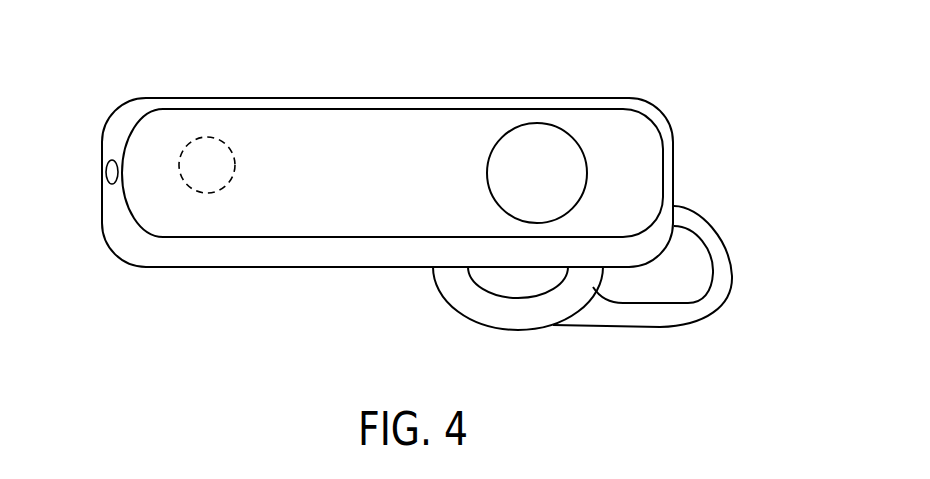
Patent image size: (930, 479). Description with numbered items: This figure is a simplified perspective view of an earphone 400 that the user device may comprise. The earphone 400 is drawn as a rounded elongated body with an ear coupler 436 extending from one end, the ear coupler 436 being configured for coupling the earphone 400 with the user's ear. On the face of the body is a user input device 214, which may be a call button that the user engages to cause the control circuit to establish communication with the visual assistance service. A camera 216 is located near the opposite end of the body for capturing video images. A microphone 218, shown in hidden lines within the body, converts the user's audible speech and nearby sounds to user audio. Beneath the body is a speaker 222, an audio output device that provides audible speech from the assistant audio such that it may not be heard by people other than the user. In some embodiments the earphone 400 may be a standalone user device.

The earphone 400 is at (682, 78).
The camera 216 is at (112, 172).
The microphone 218 is at (236, 165).
The user input device 214 is at (487, 173).
The speaker 222 is at (428, 292).
The ear coupler 436 is at (723, 240).